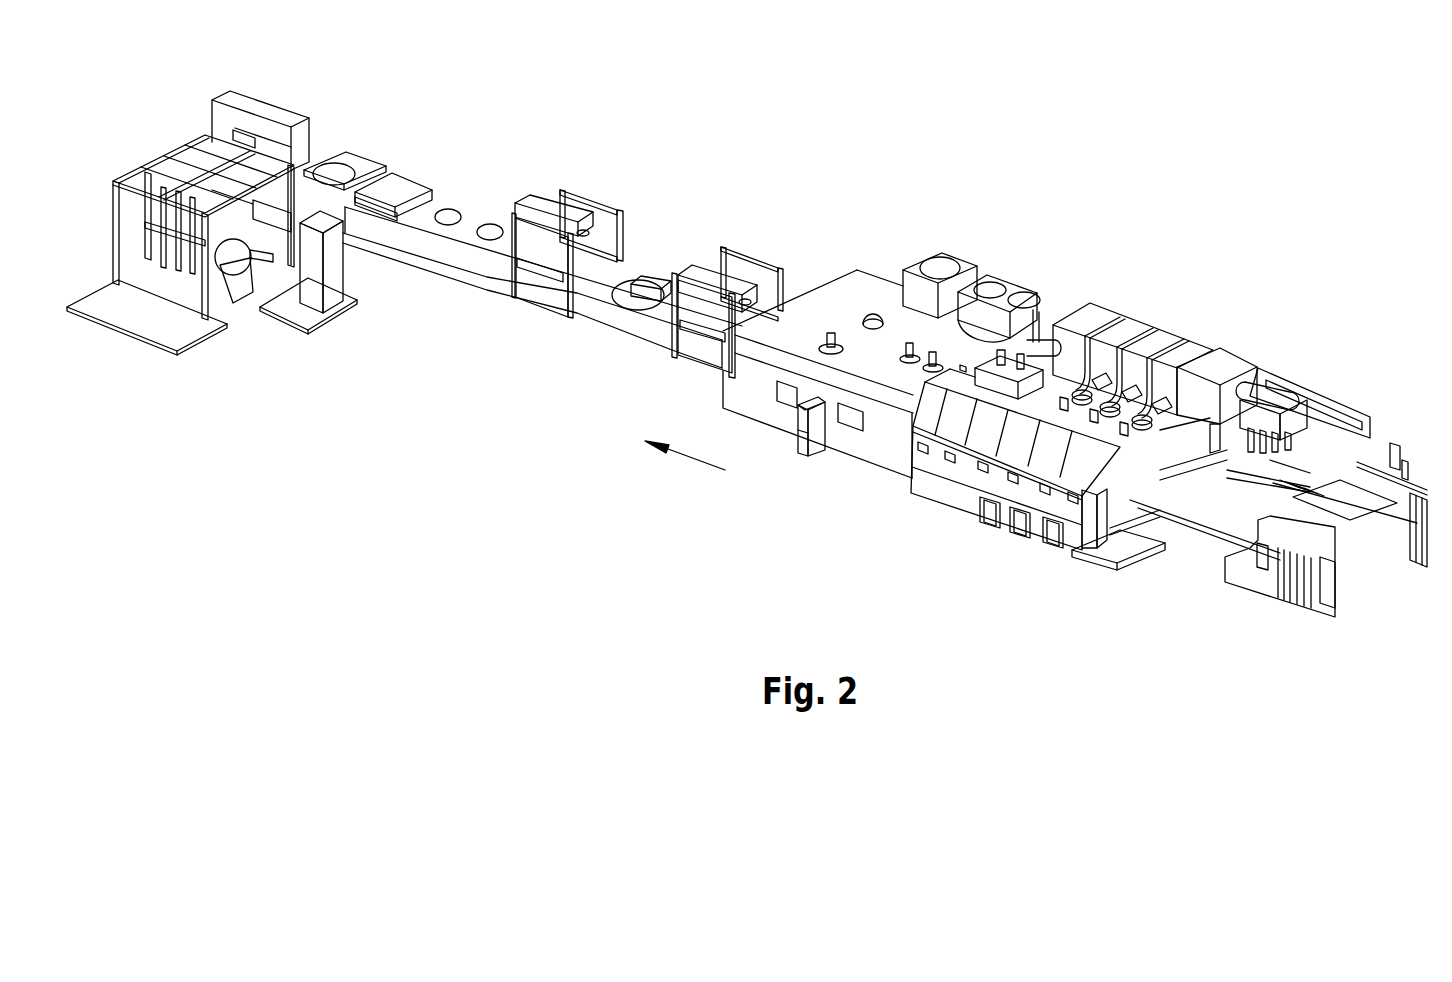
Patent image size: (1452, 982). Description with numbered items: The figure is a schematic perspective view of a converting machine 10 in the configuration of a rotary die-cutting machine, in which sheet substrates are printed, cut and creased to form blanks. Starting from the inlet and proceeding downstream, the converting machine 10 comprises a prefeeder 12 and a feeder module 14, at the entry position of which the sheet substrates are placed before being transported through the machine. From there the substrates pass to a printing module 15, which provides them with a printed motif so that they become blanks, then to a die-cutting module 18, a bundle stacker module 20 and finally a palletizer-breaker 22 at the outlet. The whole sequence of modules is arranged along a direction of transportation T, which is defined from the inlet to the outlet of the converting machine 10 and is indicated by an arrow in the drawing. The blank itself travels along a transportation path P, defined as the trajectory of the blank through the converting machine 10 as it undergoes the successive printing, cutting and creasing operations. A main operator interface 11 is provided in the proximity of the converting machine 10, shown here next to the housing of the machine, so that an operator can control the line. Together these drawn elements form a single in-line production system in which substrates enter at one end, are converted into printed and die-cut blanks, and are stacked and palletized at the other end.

The converting machine 10 is at (752, 354).
The main operator interface 11 is at (803, 457).
The prefeeder 12 is at (1391, 427).
The feeder module 14 is at (1244, 343).
The printing module 15 is at (1137, 298).
The die-cutting module 18 is at (957, 240).
The bundle stacker module 20 is at (874, 270).
The palletizer-breaker 22 is at (759, 236).
The transportation path P is at (633, 270).
The direction of transportation T is at (685, 461).